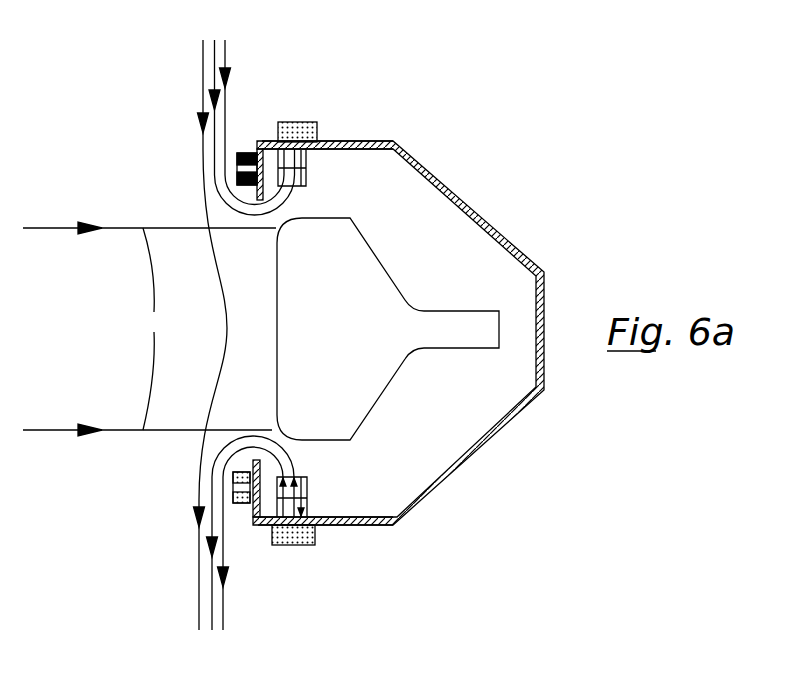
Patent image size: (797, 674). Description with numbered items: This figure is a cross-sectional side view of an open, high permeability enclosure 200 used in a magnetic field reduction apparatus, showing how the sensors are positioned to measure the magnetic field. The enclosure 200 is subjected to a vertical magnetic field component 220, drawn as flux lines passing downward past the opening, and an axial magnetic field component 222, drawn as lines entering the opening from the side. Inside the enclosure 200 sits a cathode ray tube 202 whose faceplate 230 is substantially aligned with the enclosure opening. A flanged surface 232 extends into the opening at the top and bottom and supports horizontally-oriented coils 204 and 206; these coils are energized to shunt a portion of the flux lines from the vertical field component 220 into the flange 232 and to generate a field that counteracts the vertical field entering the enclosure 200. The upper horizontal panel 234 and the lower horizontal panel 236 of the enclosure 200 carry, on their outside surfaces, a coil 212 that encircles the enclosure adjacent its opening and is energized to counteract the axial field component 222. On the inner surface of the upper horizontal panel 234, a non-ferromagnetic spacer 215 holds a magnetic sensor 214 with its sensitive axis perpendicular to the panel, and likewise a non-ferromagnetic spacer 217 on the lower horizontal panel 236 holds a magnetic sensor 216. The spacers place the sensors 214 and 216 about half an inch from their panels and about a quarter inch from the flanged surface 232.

The open enclosure 200 is at (457, 192).
The cathode ray tube 202 is at (382, 267).
The horizontally-oriented coil 204 is at (240, 153).
The horizontally-oriented coil 206 is at (257, 516).
The coil 212 is at (307, 121).
The magnetic sensor 214 is at (310, 178).
The non-ferromagnetic spacer 215 is at (310, 153).
The magnetic sensor 216 is at (308, 483).
The non-ferromagnetic spacer 217 is at (308, 508).
The vertical magnetic field component 220 is at (235, 38).
The axial magnetic field component 222 is at (149, 329).
The faceplate 230 is at (275, 275).
The flanged surface 232 is at (245, 153).
The upper horizontal panel 234 is at (372, 141).
The lower horizontal panel 236 is at (360, 527).